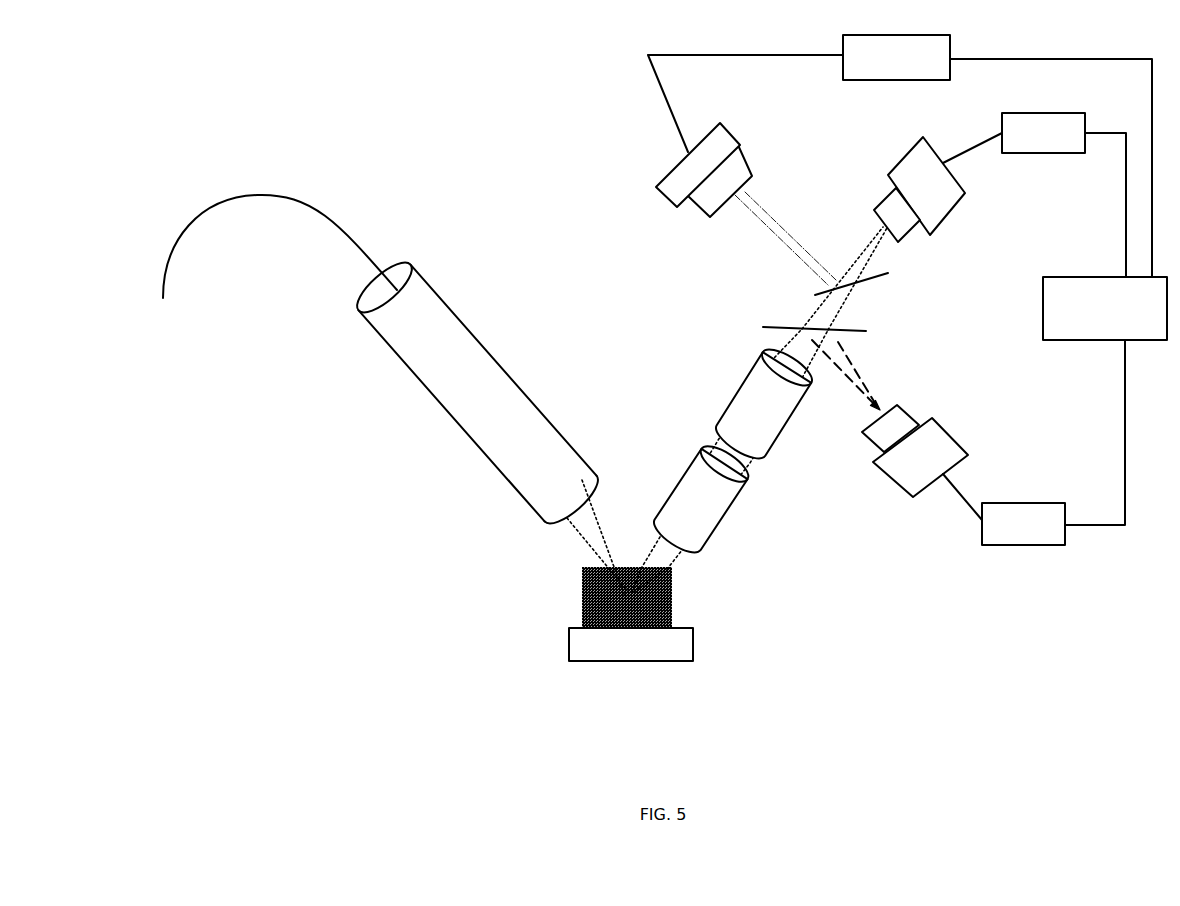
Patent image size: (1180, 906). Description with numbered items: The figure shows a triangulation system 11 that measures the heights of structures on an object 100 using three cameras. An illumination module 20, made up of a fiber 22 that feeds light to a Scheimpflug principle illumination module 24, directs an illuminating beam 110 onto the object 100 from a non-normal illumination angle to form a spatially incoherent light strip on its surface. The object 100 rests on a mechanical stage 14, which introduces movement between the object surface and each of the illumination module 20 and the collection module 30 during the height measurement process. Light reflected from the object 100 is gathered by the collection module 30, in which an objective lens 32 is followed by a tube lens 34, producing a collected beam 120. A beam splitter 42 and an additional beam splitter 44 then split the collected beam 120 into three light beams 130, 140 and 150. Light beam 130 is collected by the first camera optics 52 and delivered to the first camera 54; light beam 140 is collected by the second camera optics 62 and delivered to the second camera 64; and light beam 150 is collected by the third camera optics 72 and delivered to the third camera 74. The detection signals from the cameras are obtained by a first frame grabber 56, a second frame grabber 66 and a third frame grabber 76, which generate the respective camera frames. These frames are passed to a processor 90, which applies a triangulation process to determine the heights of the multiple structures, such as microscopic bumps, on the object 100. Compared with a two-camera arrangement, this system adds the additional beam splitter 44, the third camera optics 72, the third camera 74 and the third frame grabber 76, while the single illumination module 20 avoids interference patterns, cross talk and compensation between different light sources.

The triangulation system 11 is at (256, 760).
The mechanical stage 14 is at (622, 654).
The illumination module 20 is at (375, 396).
The fiber 22 is at (279, 257).
The Scheimpflug principle illumination module 24 is at (512, 441).
The collection module 30 is at (797, 493).
The objective lens 32 is at (690, 524).
The tube lens 34 is at (752, 422).
The beam splitter 42 is at (773, 325).
The additional beam splitter 44 is at (885, 276).
The first camera optics 52 is at (888, 226).
The first camera 54 is at (917, 196).
The first frame grabber 56 is at (1026, 144).
The second camera optics 62 is at (882, 440).
The second camera 64 is at (909, 474).
The second frame grabber 66 is at (1012, 535).
The third camera optics 72 is at (708, 192).
The third camera 74 is at (687, 180).
The third frame grabber 76 is at (886, 67).
The processor 90 is at (1089, 317).
The object 100 is at (581, 598).
The illuminating beam 110 is at (600, 520).
The collected beam 120 is at (688, 560).
The light beam 130 is at (867, 247).
The light beam 140 is at (857, 368).
The light beam 150 is at (768, 232).